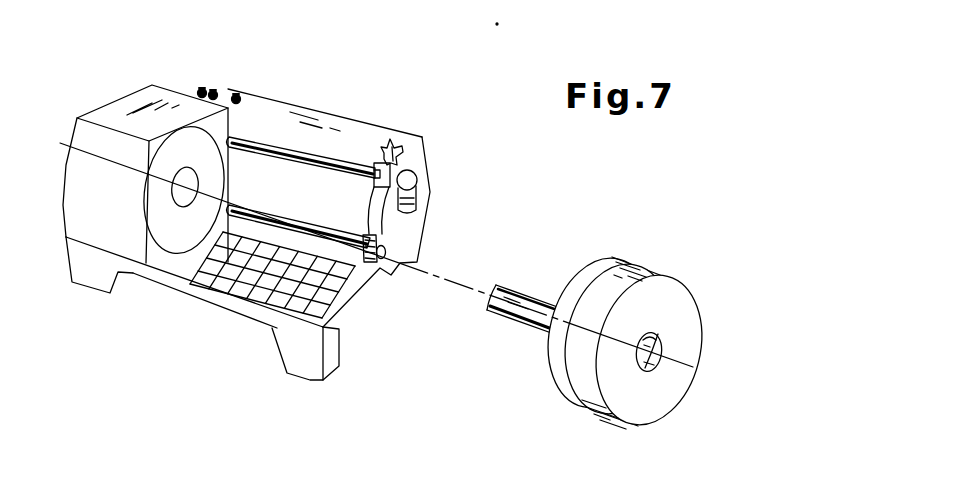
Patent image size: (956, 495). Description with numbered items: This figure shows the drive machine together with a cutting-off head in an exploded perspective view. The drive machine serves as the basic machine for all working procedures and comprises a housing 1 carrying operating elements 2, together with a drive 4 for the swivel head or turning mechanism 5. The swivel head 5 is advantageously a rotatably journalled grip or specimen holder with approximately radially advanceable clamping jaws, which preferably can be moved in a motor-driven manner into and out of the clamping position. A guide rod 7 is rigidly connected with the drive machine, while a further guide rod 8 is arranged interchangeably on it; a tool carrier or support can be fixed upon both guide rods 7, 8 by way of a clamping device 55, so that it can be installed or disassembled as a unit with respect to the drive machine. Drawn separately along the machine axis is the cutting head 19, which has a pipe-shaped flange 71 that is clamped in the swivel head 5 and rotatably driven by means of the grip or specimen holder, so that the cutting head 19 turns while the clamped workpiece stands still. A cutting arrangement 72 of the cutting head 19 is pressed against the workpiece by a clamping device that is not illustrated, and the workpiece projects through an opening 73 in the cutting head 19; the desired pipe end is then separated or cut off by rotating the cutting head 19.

The housing 1 is at (338, 133).
The operating elements 2 is at (234, 94).
The drive 4 is at (124, 103).
The swivel head 5 is at (167, 235).
The guide rod 7 is at (255, 295).
The further guide rod 8 is at (278, 148).
The cutting head 19 is at (653, 287).
The clamping device 55 is at (394, 148).
The pipe-shaped flange 71 is at (510, 318).
The cutting arrangement 72 is at (660, 333).
The opening 73 is at (645, 368).